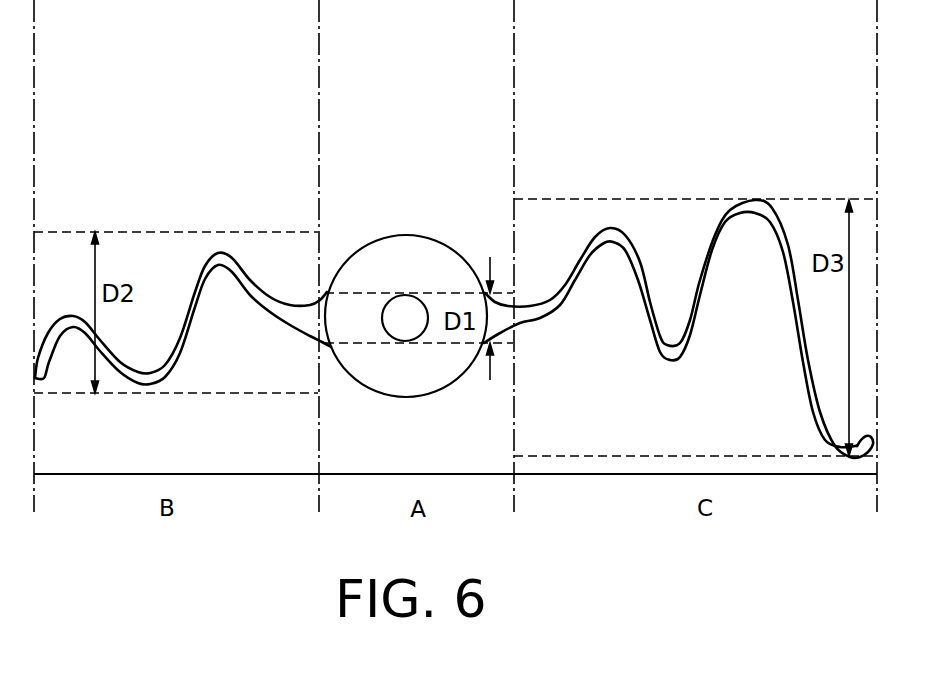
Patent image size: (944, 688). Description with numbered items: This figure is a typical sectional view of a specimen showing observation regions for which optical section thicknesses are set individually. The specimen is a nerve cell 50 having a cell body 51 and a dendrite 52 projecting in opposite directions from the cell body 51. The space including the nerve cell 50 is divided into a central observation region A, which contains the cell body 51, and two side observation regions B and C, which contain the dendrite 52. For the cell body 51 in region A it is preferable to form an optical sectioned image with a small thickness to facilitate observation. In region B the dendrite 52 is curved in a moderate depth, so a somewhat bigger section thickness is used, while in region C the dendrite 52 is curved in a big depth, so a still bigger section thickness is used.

The nerve cell 50 is at (389, 126).
The cell body 51 is at (415, 250).
The dendrite 52 is at (270, 308).